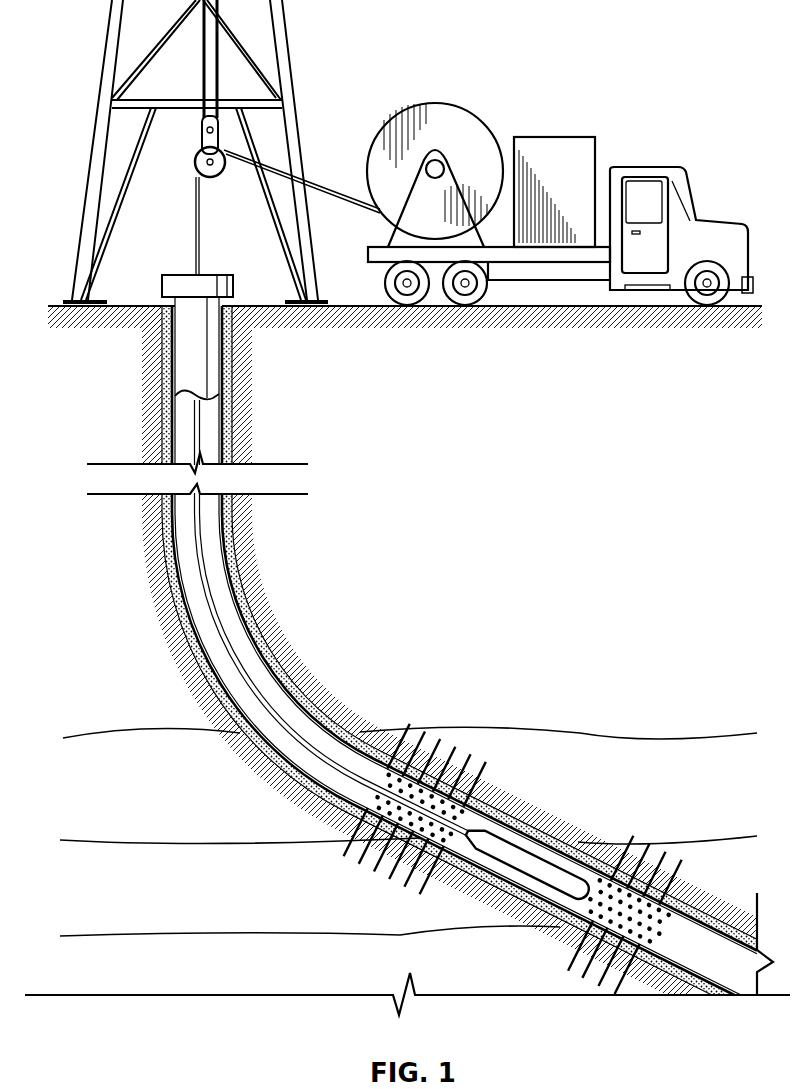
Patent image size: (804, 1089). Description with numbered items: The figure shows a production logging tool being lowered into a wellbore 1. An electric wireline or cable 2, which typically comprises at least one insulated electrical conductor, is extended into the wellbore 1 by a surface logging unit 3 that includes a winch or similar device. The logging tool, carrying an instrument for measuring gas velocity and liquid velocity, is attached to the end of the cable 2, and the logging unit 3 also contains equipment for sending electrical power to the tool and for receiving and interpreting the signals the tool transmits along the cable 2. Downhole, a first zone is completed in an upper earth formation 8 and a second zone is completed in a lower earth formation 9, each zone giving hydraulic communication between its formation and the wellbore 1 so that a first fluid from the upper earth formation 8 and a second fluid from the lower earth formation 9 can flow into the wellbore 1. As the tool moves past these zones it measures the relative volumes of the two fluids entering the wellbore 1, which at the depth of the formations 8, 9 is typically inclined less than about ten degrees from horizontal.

The wellbore 1 is at (212, 435).
The electric wireline or cable 2 is at (315, 190).
The surface logging unit 3 is at (555, 137).
The upper earth formation 8 is at (157, 789).
The lower earth formation 9 is at (192, 897).